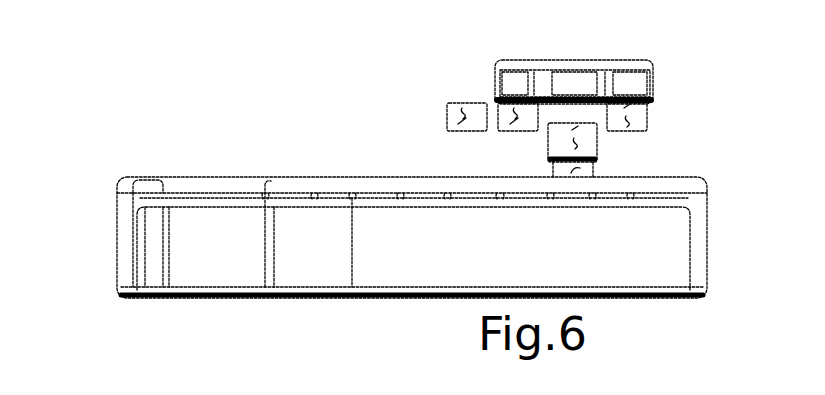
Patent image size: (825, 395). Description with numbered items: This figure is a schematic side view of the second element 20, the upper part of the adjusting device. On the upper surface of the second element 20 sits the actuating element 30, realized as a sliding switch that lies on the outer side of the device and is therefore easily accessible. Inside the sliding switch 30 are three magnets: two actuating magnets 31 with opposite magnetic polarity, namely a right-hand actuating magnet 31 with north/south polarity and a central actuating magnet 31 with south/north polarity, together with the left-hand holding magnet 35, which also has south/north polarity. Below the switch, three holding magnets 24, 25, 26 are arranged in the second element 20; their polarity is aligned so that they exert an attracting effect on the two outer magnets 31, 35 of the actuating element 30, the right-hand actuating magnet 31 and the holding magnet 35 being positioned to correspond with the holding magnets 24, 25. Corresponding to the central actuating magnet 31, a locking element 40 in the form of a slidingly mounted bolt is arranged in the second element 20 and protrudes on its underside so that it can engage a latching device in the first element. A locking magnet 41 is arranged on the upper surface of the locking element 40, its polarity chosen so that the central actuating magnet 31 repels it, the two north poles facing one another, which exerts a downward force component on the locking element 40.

The second element 20 is at (252, 200).
The holding magnet 24 is at (648, 118).
The holding magnet 25 is at (498, 133).
The holding magnet 26 is at (447, 113).
The actuating element 30 is at (508, 63).
The actuating magnet 31 is at (583, 72).
The holding magnet 35 is at (496, 78).
The locking element 40 is at (577, 170).
The locking magnet 41 is at (586, 138).